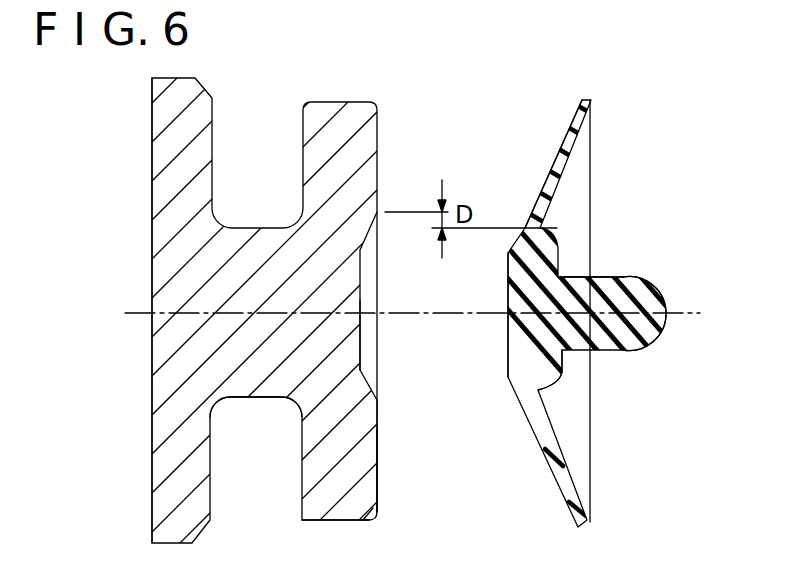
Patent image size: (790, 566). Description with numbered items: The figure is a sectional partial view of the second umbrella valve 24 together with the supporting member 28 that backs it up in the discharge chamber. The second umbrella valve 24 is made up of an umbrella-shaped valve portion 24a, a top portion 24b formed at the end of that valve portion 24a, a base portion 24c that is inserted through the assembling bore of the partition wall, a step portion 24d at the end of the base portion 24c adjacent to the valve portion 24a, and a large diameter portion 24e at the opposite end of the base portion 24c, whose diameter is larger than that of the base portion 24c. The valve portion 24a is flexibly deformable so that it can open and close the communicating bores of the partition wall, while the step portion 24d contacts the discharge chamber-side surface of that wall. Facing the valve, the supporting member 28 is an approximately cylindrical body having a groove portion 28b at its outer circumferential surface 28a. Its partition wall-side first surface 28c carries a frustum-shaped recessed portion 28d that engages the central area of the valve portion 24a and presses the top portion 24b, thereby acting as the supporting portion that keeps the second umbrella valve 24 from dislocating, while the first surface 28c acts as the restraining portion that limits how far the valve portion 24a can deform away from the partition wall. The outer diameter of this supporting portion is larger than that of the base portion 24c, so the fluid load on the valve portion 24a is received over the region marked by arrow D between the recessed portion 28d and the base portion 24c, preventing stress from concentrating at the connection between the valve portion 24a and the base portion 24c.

The second umbrella valve 24 is at (580, 265).
The valve portion 24a is at (551, 172).
The top portion 24b is at (508, 340).
The base portion 24c is at (601, 277).
The step portion 24d is at (562, 374).
The large diameter portion 24e is at (658, 340).
The supporting member 28 is at (150, 167).
The outer circumferential surface 28a is at (346, 522).
The groove portion 28b is at (300, 470).
The first surface 28c is at (443, 460).
The recessed portion 28d is at (431, 309).